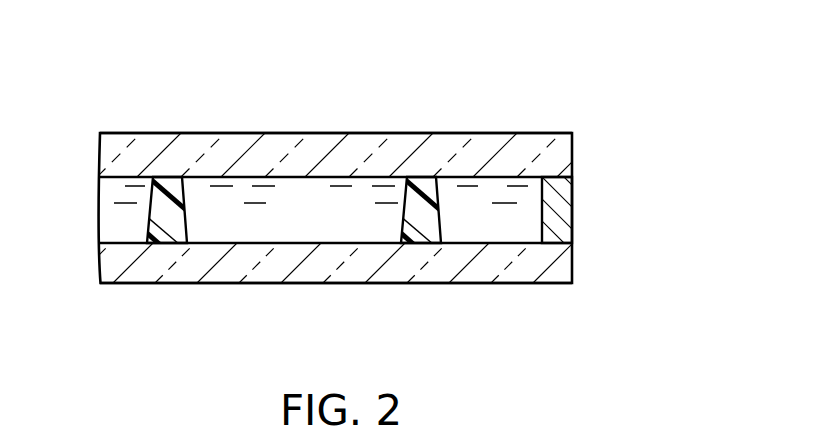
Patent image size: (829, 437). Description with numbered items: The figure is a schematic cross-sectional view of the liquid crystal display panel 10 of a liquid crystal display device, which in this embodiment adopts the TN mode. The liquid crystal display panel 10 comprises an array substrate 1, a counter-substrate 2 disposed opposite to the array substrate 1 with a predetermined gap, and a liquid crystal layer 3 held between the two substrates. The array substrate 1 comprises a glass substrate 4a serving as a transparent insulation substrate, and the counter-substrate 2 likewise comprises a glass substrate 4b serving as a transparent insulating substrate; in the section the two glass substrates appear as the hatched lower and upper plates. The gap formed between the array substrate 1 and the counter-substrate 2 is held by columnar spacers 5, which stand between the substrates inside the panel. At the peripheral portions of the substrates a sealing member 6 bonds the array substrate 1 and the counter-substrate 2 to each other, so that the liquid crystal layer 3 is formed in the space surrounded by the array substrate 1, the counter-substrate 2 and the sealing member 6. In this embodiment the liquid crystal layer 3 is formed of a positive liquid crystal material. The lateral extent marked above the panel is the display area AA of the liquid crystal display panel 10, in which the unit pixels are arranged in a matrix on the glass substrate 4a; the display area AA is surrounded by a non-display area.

The array substrate 1 is at (88, 249).
The counter-substrate 2 is at (84, 166).
The liquid crystal layer 3 is at (103, 217).
The glass substrate 4a is at (103, 275).
The glass substrate 4b is at (100, 147).
The columnar spacers 5 is at (180, 183).
The sealing member 6 is at (573, 212).
The liquid crystal display panel 10 is at (601, 108).
The display area AA is at (542, 283).